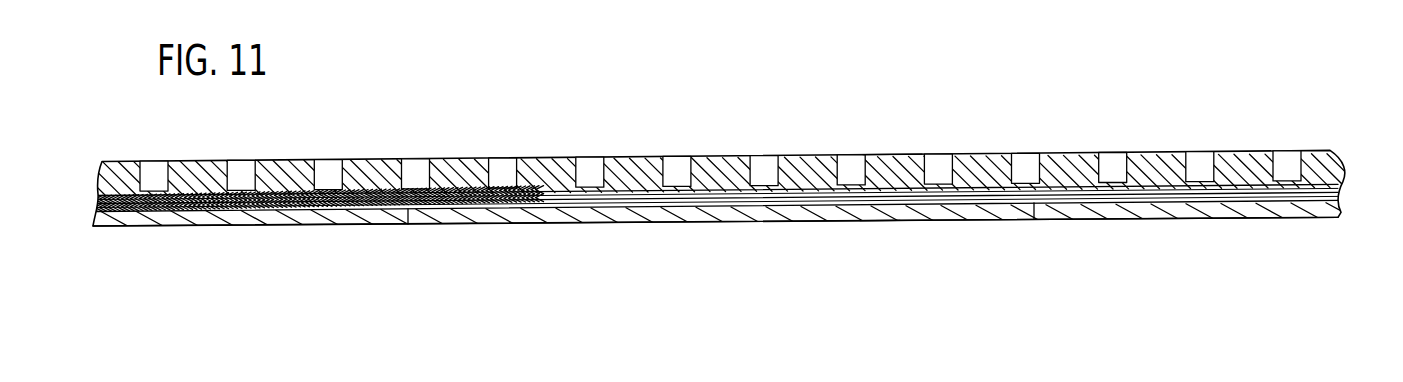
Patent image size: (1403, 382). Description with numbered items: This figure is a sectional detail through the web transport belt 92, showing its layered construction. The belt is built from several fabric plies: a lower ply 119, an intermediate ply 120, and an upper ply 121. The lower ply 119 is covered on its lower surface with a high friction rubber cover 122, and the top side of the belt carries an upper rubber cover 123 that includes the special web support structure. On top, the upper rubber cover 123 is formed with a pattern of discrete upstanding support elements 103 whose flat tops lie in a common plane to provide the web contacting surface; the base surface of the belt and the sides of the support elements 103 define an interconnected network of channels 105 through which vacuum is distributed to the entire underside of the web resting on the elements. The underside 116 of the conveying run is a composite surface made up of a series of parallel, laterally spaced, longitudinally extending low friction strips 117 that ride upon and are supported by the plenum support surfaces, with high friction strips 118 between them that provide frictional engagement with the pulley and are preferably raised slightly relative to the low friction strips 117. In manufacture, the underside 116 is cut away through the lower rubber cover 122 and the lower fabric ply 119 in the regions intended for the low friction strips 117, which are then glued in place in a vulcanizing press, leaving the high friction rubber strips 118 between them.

The web transport belt 92 is at (627, 158).
The support elements 103 is at (374, 165).
The channels 105 is at (243, 173).
The underside 116 is at (880, 219).
The low friction strips 117 is at (722, 213).
The high friction strips 118 is at (305, 226).
The lower ply 119 is at (1112, 208).
The intermediate ply 120 is at (718, 204).
The upper ply 121 is at (716, 196).
The high friction rubber cover 122 is at (230, 217).
The upper rubber cover 123 is at (890, 167).